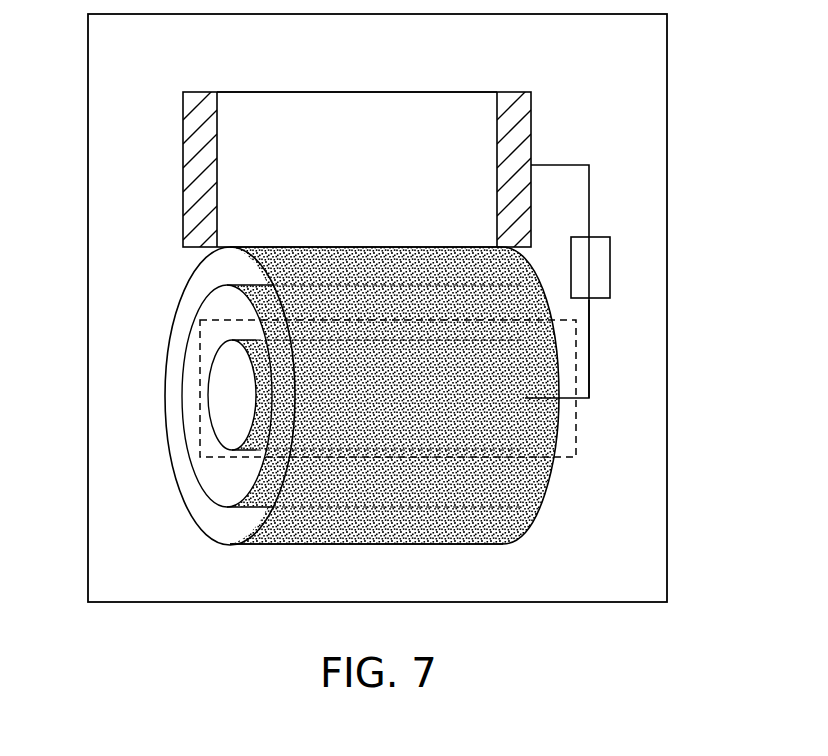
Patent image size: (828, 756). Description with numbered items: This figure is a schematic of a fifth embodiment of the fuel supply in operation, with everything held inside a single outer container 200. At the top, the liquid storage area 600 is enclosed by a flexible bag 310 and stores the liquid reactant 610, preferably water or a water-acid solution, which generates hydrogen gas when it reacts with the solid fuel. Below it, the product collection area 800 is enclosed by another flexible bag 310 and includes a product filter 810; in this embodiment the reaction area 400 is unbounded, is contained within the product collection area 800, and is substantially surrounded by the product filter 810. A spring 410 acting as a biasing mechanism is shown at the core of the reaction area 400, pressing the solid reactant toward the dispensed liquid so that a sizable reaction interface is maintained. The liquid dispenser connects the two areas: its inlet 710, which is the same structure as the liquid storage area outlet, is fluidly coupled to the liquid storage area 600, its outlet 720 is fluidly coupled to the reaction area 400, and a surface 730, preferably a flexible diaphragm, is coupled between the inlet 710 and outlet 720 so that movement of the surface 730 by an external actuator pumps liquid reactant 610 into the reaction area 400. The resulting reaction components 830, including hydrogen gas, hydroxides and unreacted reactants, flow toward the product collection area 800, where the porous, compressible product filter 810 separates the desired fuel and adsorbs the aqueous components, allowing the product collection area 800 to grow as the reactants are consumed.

The outer container 200 is at (667, 60).
The flexible bag 310 is at (396, 92).
The reaction area 400 is at (576, 433).
The spring 410 is at (253, 395).
The liquid storage area 600 is at (305, 122).
The liquid reactant 610 is at (379, 186).
The inlet 710 is at (567, 165).
The outlet 720 is at (589, 365).
The surface 730 is at (610, 261).
The product collection area 800 is at (625, 561).
The product filter 810 is at (542, 494).
The reaction components 830 is at (297, 544).